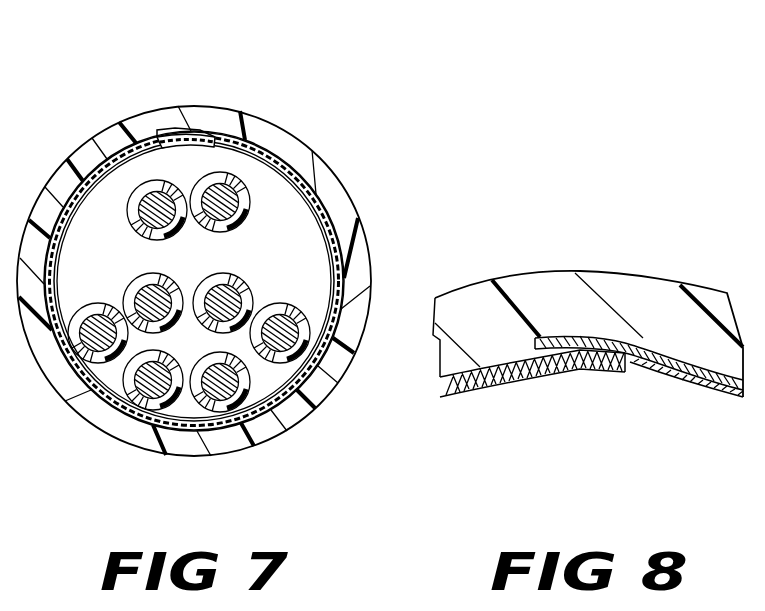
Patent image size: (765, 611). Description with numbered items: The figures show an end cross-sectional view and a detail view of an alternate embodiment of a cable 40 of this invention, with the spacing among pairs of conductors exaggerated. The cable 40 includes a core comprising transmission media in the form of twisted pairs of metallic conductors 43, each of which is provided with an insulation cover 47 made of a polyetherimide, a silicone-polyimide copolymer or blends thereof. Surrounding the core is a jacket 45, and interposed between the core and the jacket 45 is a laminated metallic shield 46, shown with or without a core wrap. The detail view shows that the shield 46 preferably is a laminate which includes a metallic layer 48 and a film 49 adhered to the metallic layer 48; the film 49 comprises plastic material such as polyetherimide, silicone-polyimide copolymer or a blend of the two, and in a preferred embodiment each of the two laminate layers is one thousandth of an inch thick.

In FIG. 7, the cable 40 is at (111, 61).
In FIG. 7, the metallic conductors 43 is at (131, 228).
In FIG. 7, the jacket 45 is at (238, 120).
In FIG. 8, the jacket 45 is at (522, 285).
In FIG. 7, the laminated metallic shield 46 is at (312, 197).
In FIG. 8, the laminated metallic shield 46 is at (500, 388).
In FIG. 7, the insulation cover 47 is at (242, 281).
In FIG. 7, the metallic layer 48 is at (331, 233).
In FIG. 8, the metallic layer 48 is at (690, 363).
In FIG. 7, the film 49 is at (318, 229).
In FIG. 8, the film 49 is at (658, 370).